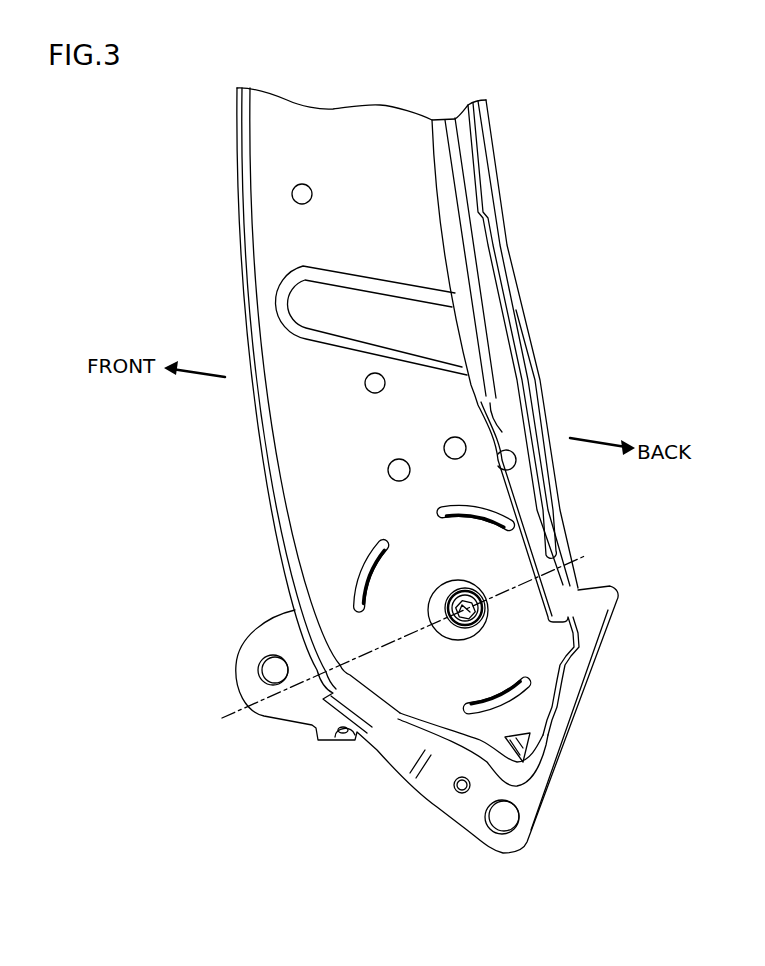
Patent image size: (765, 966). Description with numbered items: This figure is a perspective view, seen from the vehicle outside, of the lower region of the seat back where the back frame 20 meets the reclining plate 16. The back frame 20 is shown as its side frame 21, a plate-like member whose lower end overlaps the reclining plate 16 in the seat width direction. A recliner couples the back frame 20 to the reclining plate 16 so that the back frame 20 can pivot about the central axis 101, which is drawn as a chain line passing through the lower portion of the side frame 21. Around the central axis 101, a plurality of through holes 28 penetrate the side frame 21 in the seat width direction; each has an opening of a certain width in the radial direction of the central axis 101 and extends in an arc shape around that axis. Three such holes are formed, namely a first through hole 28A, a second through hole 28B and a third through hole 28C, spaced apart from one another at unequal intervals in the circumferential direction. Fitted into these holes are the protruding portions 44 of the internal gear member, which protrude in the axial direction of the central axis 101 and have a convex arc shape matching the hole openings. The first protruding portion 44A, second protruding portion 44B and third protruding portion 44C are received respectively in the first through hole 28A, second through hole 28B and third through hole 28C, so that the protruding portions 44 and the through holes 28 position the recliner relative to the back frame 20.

The back frame 20 is at (204, 142).
The side frame 21 is at (305, 462).
The reclining plate 16 is at (597, 618).
The protruding portions 44 is at (431, 595).
The first protruding portion 44A is at (460, 512).
The second protruding portion 44B is at (528, 696).
The third protruding portion 44C is at (372, 549).
The through holes 28 is at (431, 626).
The first through hole 28A is at (485, 517).
The second through hole 28B is at (513, 711).
The third through hole 28C is at (366, 587).
The central axis 101 is at (235, 714).